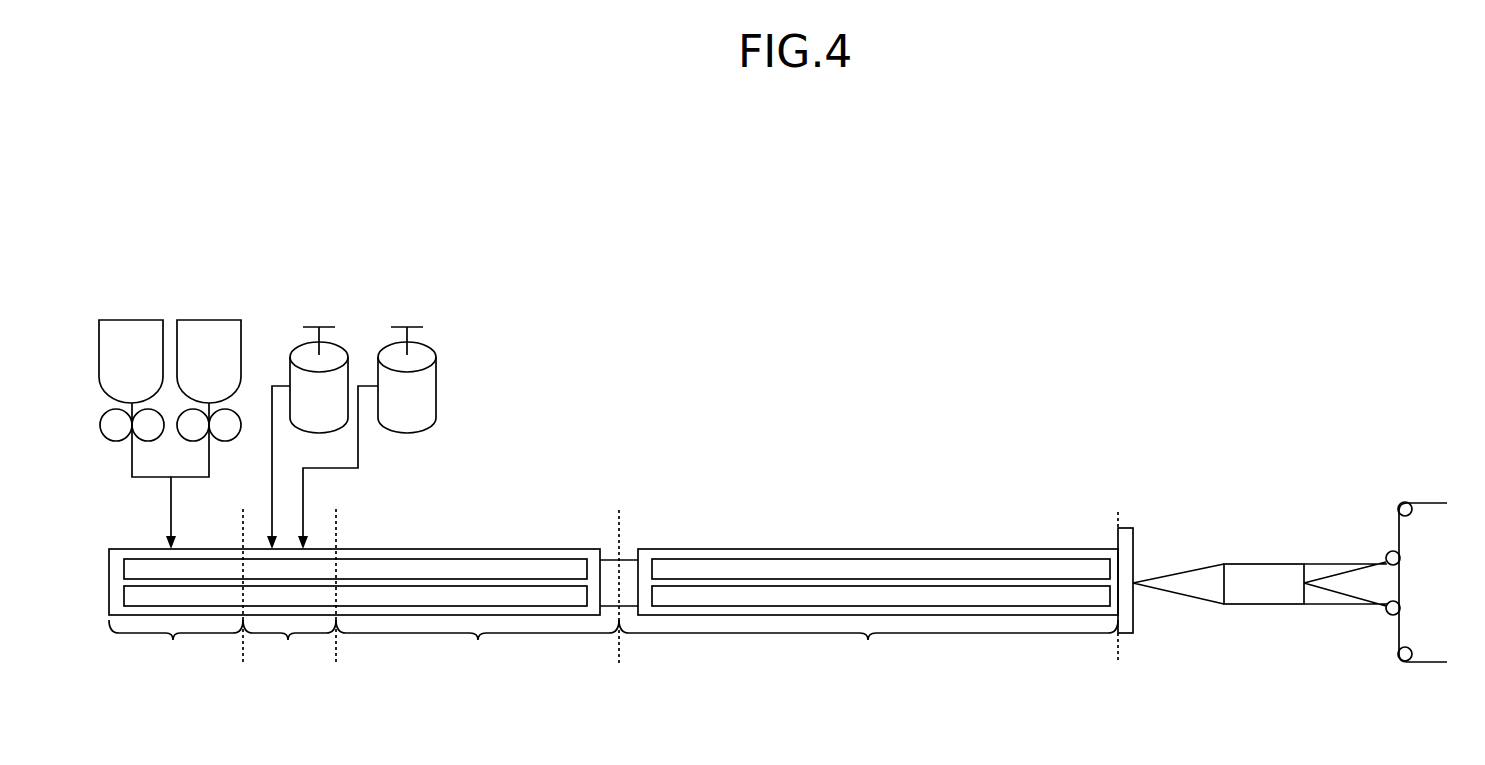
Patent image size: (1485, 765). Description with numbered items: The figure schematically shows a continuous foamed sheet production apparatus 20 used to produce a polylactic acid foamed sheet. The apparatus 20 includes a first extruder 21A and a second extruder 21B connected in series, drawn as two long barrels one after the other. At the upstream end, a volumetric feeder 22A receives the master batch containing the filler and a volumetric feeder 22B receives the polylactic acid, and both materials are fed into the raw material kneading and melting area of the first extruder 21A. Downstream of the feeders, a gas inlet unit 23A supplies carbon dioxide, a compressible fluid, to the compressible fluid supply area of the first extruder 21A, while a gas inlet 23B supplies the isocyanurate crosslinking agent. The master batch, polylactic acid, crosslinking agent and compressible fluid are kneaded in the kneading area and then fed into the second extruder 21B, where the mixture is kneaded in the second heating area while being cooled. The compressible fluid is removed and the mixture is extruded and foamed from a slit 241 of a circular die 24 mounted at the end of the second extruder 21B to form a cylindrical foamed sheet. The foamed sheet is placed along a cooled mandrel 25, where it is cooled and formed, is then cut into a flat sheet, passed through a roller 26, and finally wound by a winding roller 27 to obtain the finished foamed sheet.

The continuous foamed sheet production apparatus 20 is at (894, 453).
The first extruder 21A is at (497, 540).
The second extruder 21B is at (752, 540).
The volumetric feeder 22A is at (131, 335).
The volumetric feeder 22B is at (208, 335).
The gas inlet unit 23A is at (337, 350).
The gas inlet 23B is at (425, 350).
The circular die 24 is at (1122, 540).
The slit 241 is at (1135, 582).
The cooled mandrel 25 is at (1262, 575).
The roller 26 is at (1383, 611).
The winding roller 27 is at (1413, 510).